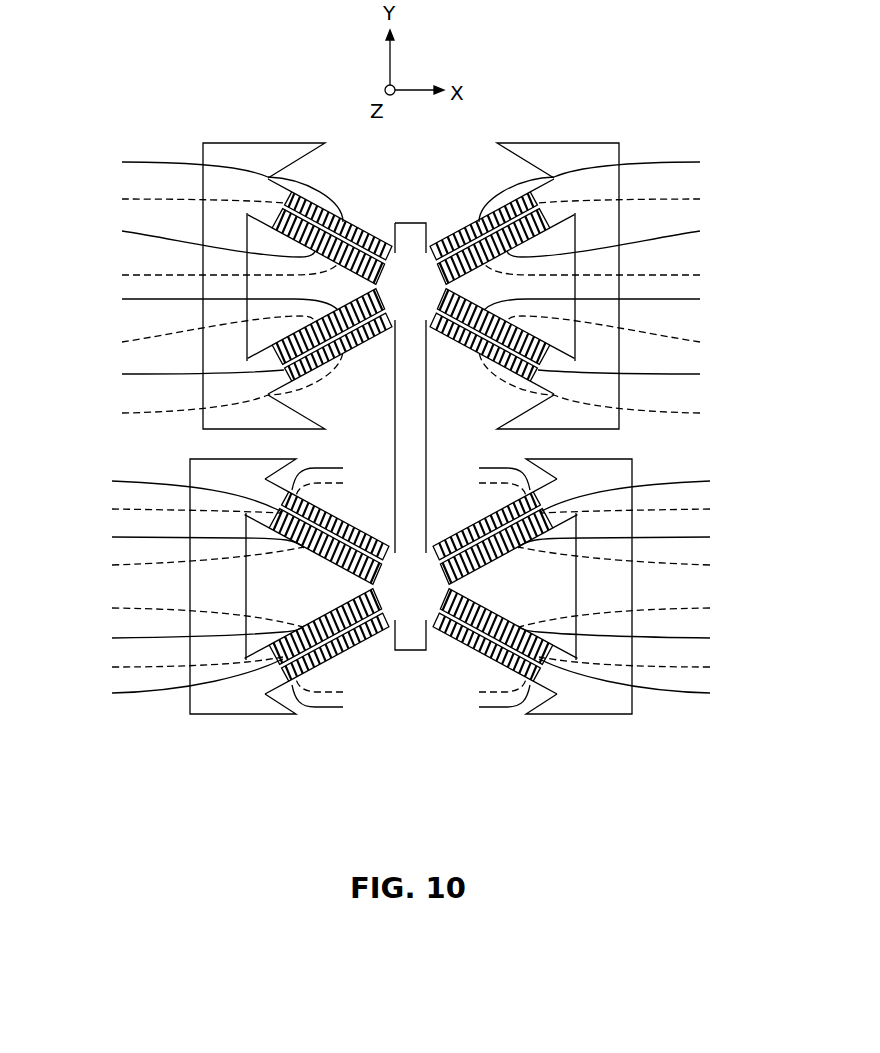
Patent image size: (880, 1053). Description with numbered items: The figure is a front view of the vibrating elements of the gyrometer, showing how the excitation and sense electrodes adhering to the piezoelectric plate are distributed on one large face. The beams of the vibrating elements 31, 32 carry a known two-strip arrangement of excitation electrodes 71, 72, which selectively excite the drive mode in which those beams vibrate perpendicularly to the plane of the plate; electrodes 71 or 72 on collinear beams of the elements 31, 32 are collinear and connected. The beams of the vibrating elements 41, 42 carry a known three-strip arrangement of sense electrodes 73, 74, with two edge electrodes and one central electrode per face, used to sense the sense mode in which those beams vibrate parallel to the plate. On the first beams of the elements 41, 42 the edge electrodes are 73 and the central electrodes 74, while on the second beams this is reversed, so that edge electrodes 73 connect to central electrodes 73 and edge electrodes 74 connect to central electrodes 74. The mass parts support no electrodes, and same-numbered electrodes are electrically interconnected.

The vibrating element 31 is at (197, 107).
The vibrating element 32 is at (625, 107).
The vibrating element 41 is at (178, 753).
The vibrating element 42 is at (644, 753).
The excitation electrode 71 is at (700, 305).
The excitation electrode 72 is at (700, 378).
The sense electrode 73 is at (476, 714).
The sense electrode 74 is at (476, 489).